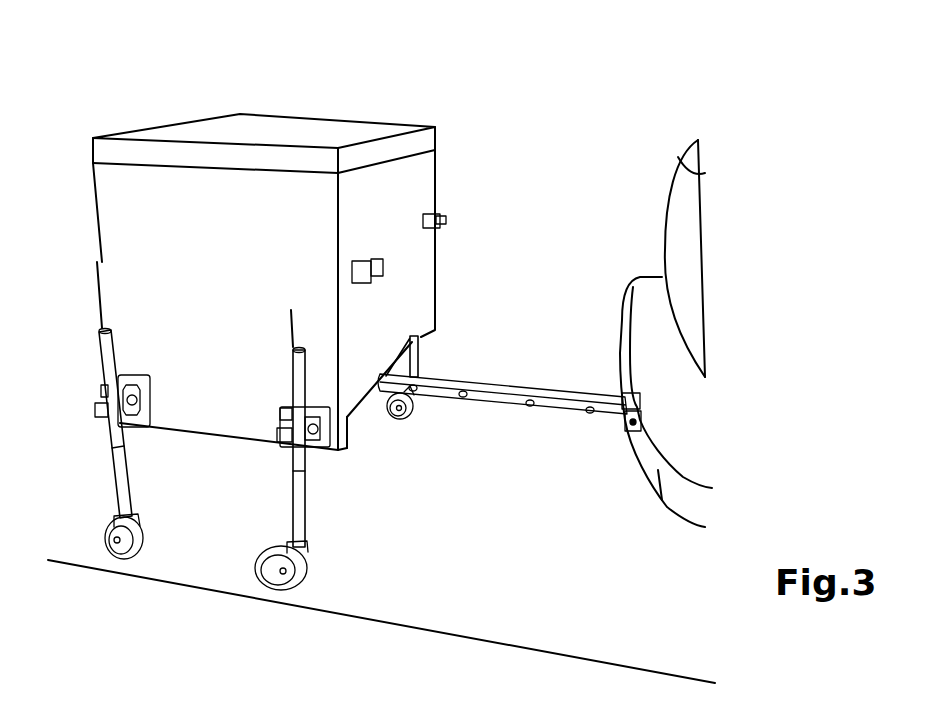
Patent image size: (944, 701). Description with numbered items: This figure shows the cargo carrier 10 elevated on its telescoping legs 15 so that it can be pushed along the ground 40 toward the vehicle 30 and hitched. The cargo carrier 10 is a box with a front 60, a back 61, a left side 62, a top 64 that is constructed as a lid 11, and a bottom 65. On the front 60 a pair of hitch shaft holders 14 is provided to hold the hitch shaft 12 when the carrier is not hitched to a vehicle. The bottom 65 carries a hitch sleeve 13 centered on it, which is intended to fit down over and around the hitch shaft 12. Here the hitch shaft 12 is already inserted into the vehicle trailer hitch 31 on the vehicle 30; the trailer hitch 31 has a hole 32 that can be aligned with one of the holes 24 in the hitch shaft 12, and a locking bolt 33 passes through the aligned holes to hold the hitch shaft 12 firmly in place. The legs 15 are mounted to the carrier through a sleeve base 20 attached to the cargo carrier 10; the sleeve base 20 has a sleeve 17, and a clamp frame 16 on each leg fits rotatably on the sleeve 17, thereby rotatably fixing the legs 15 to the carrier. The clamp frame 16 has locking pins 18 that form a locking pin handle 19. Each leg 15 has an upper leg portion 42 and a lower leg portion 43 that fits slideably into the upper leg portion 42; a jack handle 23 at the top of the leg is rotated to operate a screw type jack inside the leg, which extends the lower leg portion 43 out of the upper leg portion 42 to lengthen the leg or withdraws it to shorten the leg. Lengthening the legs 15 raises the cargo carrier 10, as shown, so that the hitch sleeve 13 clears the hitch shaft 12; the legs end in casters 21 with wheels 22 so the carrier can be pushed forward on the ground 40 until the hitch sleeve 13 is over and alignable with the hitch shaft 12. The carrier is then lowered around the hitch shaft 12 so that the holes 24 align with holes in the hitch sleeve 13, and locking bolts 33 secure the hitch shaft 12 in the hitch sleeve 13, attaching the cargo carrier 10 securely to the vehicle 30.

The cargo carrier 10 is at (343, 76).
The lid 11 is at (263, 141).
The hitch shaft 12 is at (513, 386).
The hitch sleeve 13 is at (392, 421).
The hitch shaft holders 14 is at (445, 218).
The telescoping legs 15 is at (437, 365).
The clamp frame 16 is at (100, 388).
The sleeve 17 is at (136, 398).
The locking pins 18 is at (93, 402).
The locking pin handle 19 is at (97, 415).
The sleeve base 20 is at (140, 375).
The casters 21 is at (141, 518).
The wheels 22 is at (144, 550).
The jack handle 23 is at (97, 300).
The holes 24 is at (530, 409).
The vehicle 30 is at (654, 155).
The vehicle trailer hitch 31 is at (622, 398).
The hole 32 is at (630, 431).
The locking bolt 33 is at (641, 432).
The ground 40 is at (448, 622).
The upper leg portion 42 is at (111, 348).
The lower leg portion 43 is at (121, 473).
The front 60 is at (396, 200).
The back 61 is at (84, 208).
The left side 62 is at (217, 241).
The top 64 is at (394, 123).
The bottom 65 is at (360, 405).